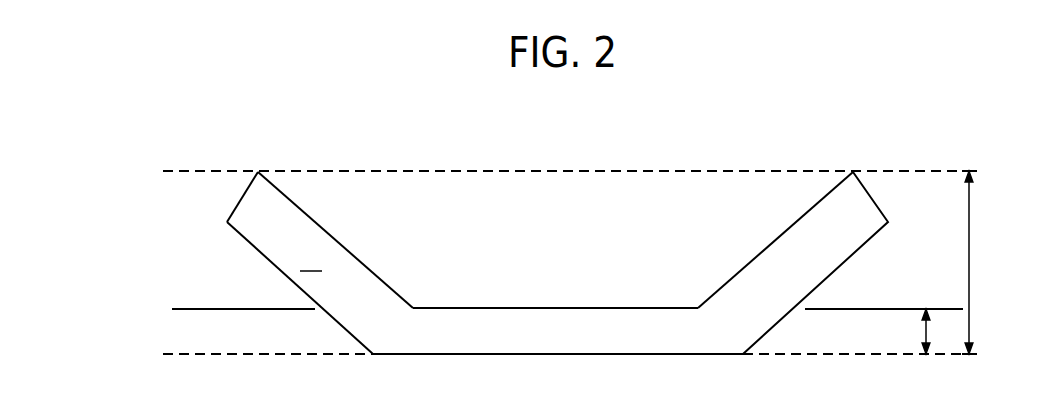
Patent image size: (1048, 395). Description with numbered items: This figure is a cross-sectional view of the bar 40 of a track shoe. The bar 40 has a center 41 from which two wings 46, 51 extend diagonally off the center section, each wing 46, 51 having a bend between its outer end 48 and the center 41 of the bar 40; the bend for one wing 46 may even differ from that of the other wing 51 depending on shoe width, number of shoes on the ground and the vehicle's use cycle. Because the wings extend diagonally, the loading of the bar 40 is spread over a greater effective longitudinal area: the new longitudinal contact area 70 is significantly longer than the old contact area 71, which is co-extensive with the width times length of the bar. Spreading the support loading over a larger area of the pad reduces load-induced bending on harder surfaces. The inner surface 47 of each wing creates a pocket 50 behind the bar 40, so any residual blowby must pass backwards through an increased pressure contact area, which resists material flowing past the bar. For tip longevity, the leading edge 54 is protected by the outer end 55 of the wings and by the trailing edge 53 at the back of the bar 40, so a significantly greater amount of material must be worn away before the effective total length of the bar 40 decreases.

The bar 40 is at (510, 338).
The center of the bar 41 is at (603, 340).
The wing 46 is at (258, 250).
The inner surface 47 is at (363, 279).
The outer end 48 is at (827, 218).
The pocket 50 is at (570, 248).
The wing 51 is at (836, 241).
The trailing edge 53 is at (227, 222).
The leading edge 54 is at (258, 172).
The outer end of the wings 55 is at (243, 208).
The longitudinal contact area 70 is at (970, 266).
The old contact area 71 is at (929, 330).